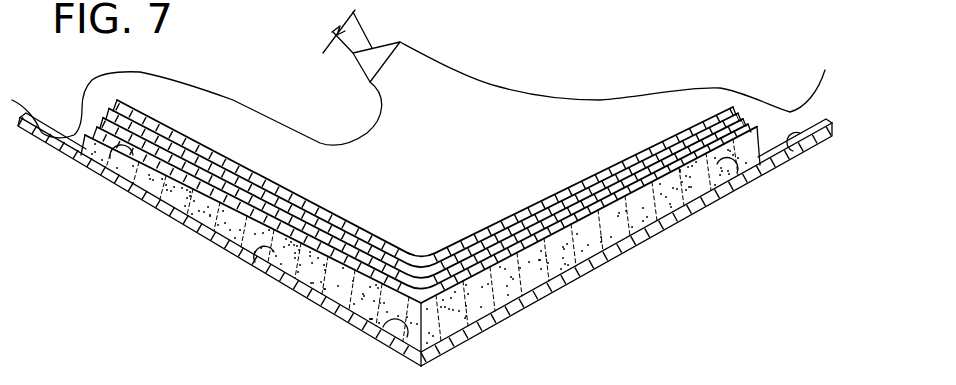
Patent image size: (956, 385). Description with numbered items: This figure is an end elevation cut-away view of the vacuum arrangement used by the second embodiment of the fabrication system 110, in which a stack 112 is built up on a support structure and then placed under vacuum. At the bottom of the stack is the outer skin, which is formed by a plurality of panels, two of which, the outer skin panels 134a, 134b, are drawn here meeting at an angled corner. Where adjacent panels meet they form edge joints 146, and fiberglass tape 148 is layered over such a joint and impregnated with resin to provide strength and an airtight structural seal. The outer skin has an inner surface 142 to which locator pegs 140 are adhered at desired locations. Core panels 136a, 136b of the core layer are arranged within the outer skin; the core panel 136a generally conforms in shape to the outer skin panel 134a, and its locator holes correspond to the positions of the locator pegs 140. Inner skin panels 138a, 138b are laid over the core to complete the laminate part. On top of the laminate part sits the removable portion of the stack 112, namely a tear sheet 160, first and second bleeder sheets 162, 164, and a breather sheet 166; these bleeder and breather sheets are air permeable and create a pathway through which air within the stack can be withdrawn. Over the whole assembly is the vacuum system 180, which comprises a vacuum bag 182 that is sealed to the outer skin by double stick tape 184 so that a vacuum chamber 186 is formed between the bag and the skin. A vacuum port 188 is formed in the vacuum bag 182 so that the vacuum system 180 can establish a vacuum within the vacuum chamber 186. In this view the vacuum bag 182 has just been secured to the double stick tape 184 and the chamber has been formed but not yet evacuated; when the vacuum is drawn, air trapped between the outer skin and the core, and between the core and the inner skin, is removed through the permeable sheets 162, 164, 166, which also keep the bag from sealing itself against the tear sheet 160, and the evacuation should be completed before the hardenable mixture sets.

The fabrication system 110 is at (295, 312).
The stack 112 is at (260, 287).
The outer skin panel 134a is at (221, 243).
The outer skin panel 134b is at (621, 252).
The core panel 136a is at (213, 217).
The core panel 136b is at (650, 233).
The inner skin panel 138a is at (207, 192).
The inner skin panel 138b is at (668, 219).
The locator pegs 140 is at (120, 157).
The inner surface 142 is at (250, 260).
The edge joints 146 is at (420, 363).
The fiberglass tape 148 is at (383, 328).
The tear sheet 160 is at (508, 242).
The first bleeder sheet 162 is at (530, 212).
The second bleeder sheet 164 is at (566, 206).
The breather sheet 166 is at (593, 183).
The vacuum system 180 is at (469, 64).
The vacuum bag 182 is at (574, 100).
The double stick tape 184 is at (793, 160).
The vacuum chamber 186 is at (454, 162).
The vacuum port 188 is at (377, 48).